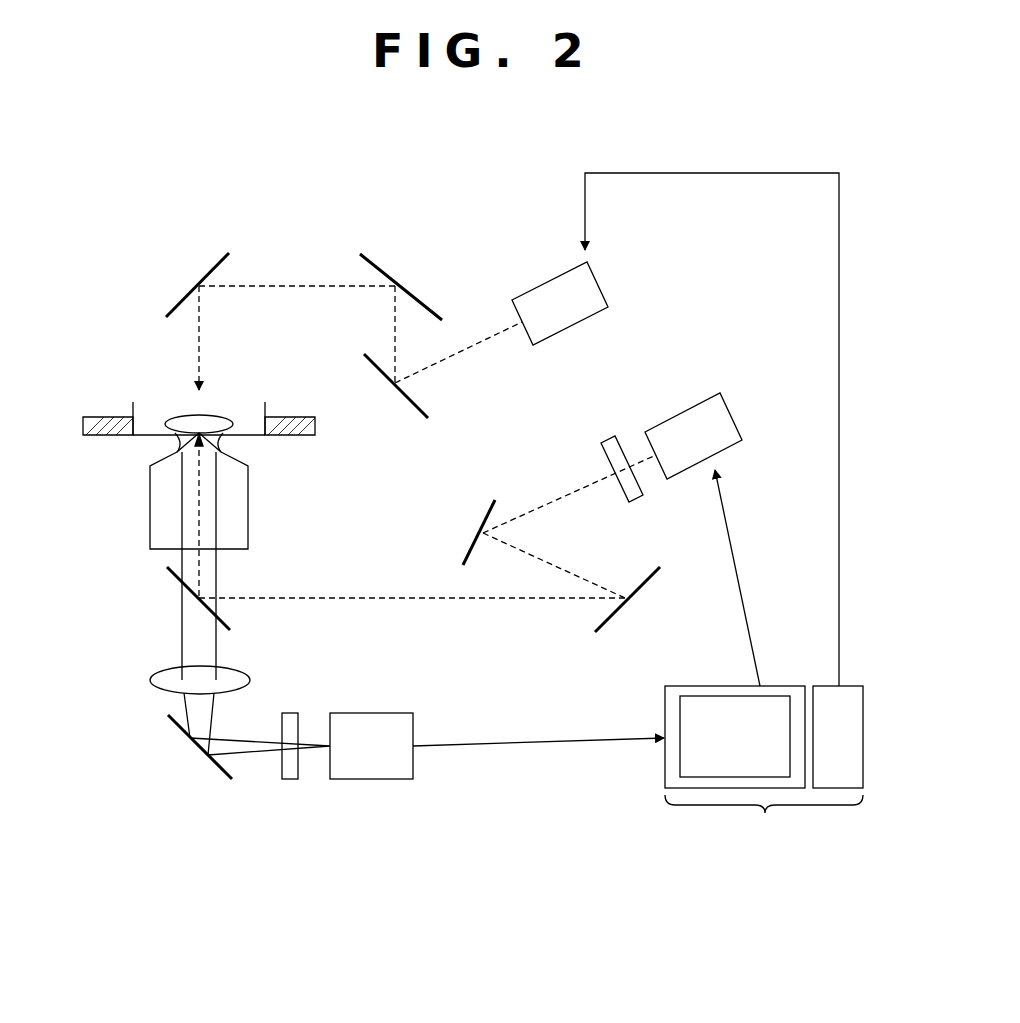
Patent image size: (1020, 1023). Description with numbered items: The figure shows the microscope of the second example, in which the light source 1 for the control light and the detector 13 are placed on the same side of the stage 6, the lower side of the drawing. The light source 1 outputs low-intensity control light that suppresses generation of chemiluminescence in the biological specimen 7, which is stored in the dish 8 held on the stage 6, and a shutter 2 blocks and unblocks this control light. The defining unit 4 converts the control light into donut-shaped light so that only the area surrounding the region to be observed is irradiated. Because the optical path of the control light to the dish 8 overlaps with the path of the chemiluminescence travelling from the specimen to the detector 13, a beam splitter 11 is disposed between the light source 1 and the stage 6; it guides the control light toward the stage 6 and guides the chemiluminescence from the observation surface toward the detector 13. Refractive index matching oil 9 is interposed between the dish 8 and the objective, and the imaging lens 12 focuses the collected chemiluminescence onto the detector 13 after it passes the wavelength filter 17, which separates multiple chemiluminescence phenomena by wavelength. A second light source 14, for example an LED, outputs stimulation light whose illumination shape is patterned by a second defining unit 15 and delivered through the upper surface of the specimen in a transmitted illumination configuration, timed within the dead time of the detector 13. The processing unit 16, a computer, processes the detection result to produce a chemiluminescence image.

The light source 1 is at (740, 420).
The shutter 2 is at (606, 438).
The defining unit 4 is at (645, 580).
The stage 6 is at (315, 420).
The biological specimen 7 is at (216, 416).
The dish 8 is at (266, 405).
The refractive index matching oil 9 is at (228, 440).
The beam splitter 11 is at (167, 574).
The imaging lens 12 is at (152, 678).
The detector 13 is at (400, 702).
The second light source 14 is at (540, 286).
The second defining unit 15 is at (415, 413).
The processing unit 16 is at (764, 766).
The wavelength filter 17 is at (291, 780).